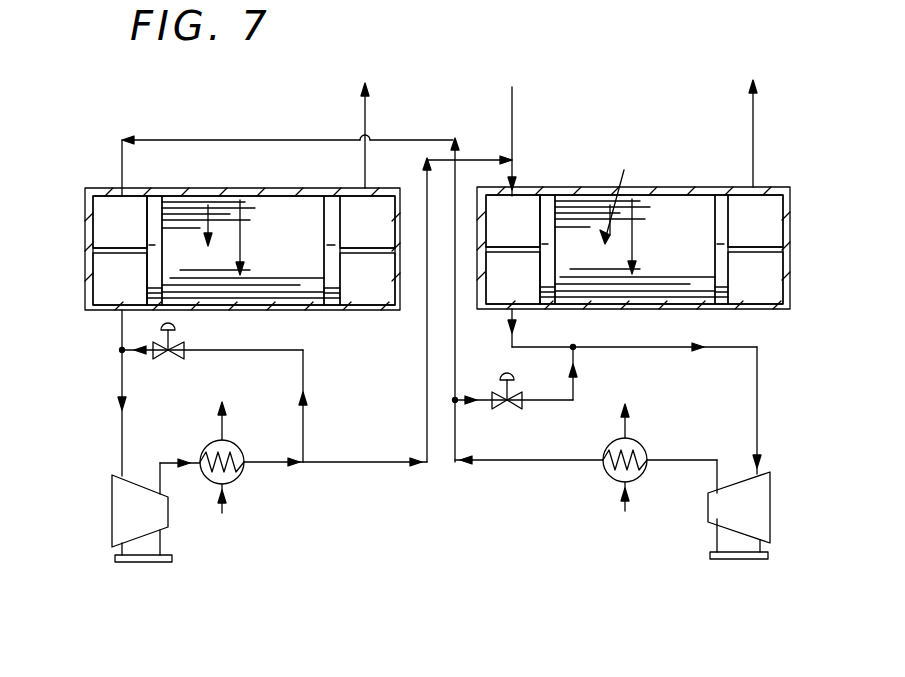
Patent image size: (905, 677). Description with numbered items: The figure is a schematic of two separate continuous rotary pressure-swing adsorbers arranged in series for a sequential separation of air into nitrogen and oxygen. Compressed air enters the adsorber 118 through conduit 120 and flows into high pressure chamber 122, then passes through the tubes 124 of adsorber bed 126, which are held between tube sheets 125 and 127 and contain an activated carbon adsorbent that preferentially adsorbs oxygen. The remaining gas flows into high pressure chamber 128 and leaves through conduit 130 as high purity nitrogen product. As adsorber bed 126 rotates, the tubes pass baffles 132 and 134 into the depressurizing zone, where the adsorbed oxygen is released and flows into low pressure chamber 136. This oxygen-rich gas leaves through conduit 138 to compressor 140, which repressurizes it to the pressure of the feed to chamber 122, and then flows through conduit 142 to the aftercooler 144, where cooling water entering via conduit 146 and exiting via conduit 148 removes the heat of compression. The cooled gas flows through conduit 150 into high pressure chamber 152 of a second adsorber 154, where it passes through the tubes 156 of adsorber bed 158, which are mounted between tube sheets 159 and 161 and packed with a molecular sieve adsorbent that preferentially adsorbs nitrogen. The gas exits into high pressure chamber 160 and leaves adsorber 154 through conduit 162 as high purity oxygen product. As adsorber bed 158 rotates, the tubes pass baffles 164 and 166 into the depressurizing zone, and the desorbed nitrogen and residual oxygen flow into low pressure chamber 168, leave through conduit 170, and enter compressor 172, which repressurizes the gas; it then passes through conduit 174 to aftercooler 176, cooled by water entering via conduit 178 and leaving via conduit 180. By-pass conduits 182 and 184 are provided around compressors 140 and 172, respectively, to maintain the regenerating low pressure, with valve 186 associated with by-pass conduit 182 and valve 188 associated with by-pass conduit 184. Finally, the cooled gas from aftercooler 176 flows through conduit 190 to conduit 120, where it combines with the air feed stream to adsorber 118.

The adsorber 118 is at (775, 176).
The conduit 120 is at (512, 99).
The high pressure chamber 122 is at (485, 215).
The tubes 124 is at (583, 196).
The tube sheet 125 is at (547, 200).
The adsorber bed 126 is at (620, 197).
The tube sheet 127 is at (718, 215).
The high pressure chamber 128 is at (768, 222).
The conduit 130 is at (753, 128).
The baffle 132 is at (737, 243).
The baffle 134 is at (512, 245).
The low pressure chamber 136 is at (498, 298).
The conduit 138 is at (538, 347).
The compressor 140 is at (762, 482).
The conduit 142 is at (680, 462).
The aftercooler 144 is at (614, 474).
The conduit 146 is at (620, 505).
The conduit 148 is at (628, 425).
The conduit 150 is at (285, 135).
The high pressure chamber 152 is at (103, 203).
The second adsorber 154 is at (80, 209).
The tubes 156 is at (183, 207).
The adsorber bed 158 is at (208, 235).
The tube sheet 159 is at (152, 210).
The high pressure chamber 160 is at (382, 208).
The tube sheet 161 is at (338, 195).
The conduit 162 is at (365, 123).
The baffle 164 is at (106, 247).
The baffle 166 is at (373, 255).
The low pressure chamber 168 is at (110, 283).
The conduit 170 is at (122, 366).
The compressor 172 is at (125, 511).
The conduit 174 is at (160, 470).
The aftercooler 176 is at (241, 473).
The conduit 178 is at (222, 506).
The conduit 180 is at (222, 420).
The by-pass conduit 182 is at (574, 392).
The by-pass conduit 184 is at (303, 376).
The valve 186 is at (507, 410).
The valve 188 is at (178, 360).
The conduit 190 is at (485, 147).